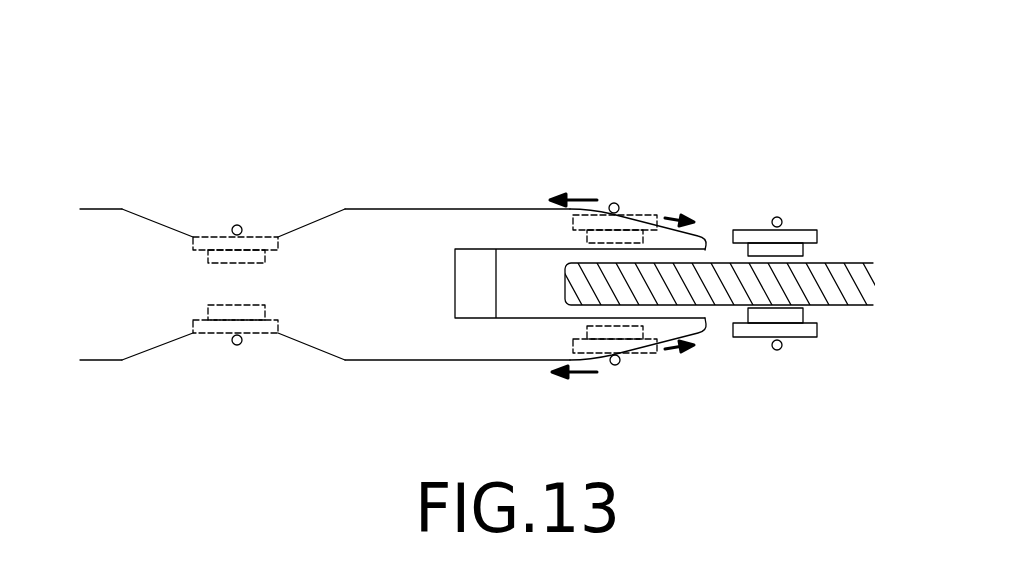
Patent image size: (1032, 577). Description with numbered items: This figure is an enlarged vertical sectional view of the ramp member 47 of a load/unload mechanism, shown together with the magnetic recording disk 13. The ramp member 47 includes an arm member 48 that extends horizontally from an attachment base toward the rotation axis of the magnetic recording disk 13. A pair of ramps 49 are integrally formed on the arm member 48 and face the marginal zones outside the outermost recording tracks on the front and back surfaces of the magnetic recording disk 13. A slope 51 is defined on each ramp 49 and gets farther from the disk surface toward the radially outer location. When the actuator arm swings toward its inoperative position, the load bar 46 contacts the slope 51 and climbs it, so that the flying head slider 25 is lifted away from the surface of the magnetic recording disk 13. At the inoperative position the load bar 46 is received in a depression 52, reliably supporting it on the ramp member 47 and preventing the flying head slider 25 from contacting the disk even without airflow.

The magnetic recording disk 13 is at (852, 262).
The flying head slider 25 is at (805, 248).
The load bar 46 is at (235, 225).
The ramp member 47 is at (162, 168).
The arm member 48 is at (122, 209).
The ramp 49 is at (537, 213).
The slope 51 is at (697, 232).
The depression 52 is at (298, 222).